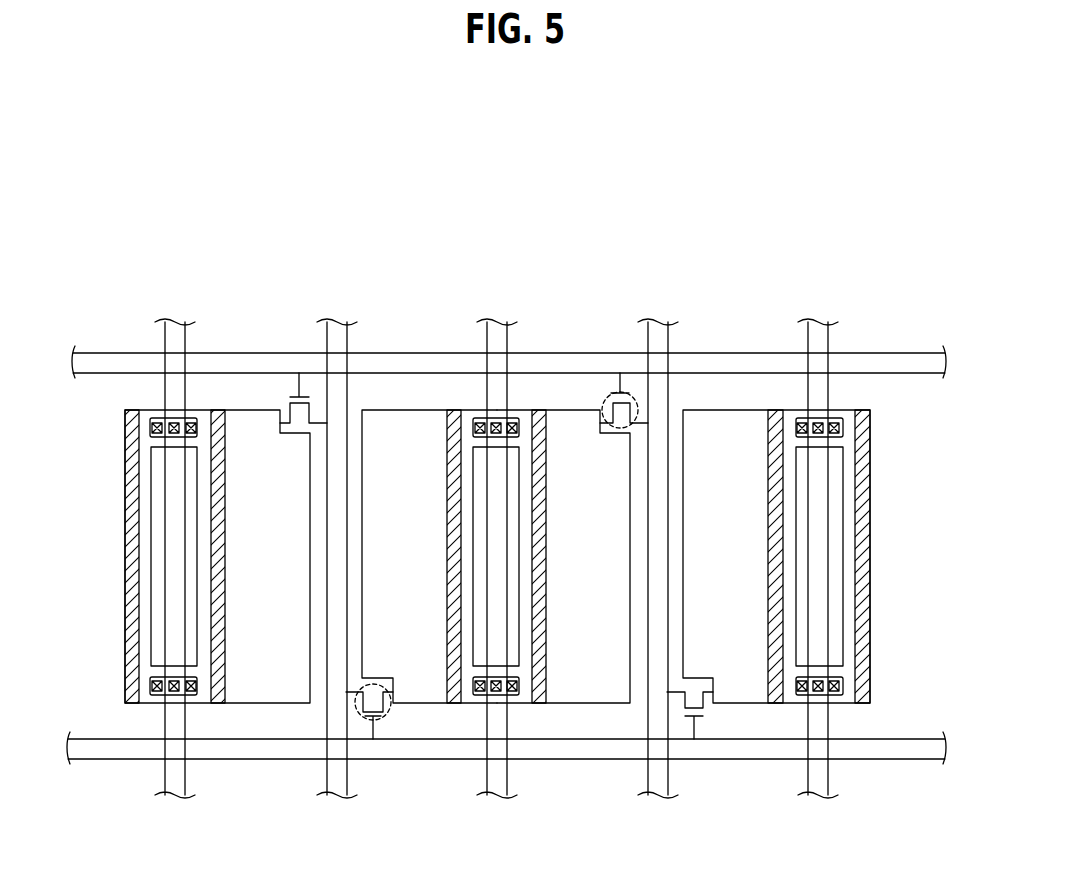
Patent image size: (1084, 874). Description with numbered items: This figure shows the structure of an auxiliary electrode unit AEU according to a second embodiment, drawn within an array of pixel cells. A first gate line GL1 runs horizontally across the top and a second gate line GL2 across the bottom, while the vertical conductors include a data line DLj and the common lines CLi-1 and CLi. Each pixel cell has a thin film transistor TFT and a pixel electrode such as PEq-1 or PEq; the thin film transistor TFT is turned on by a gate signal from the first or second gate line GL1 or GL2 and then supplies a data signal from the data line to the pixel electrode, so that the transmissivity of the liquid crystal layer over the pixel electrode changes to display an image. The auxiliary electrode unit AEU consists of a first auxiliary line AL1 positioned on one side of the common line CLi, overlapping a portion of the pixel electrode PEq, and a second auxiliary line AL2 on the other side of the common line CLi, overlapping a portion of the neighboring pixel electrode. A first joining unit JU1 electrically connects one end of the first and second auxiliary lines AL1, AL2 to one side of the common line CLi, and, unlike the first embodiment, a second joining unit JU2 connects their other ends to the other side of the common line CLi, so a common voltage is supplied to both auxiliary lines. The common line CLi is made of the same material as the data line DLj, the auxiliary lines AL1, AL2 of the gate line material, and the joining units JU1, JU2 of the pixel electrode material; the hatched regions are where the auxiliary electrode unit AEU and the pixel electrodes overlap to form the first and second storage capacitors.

The first gate line GL1 is at (118, 362).
The second gate line GL2 is at (102, 755).
The common line CLi-1 is at (178, 773).
The data line DLj is at (340, 773).
The common line CLi is at (500, 773).
The pixel electrode PEq-1 is at (292, 557).
The pixel electrode PEq is at (428, 557).
The auxiliary electrode unit AEU is at (524, 501).
The first auxiliary line AL1 is at (470, 480).
The second auxiliary line AL2 is at (527, 480).
The first joining unit JU1 is at (518, 686).
The second joining unit JU2 is at (515, 418).
The thin film transistor TFT is at (638, 408).